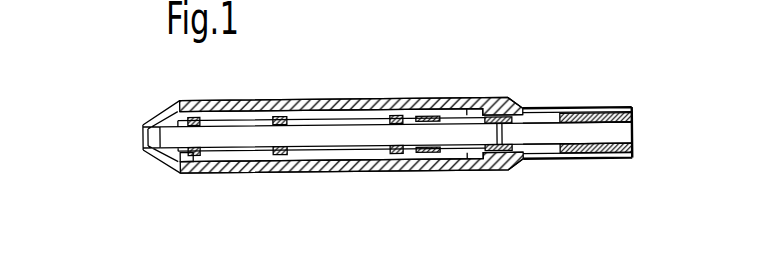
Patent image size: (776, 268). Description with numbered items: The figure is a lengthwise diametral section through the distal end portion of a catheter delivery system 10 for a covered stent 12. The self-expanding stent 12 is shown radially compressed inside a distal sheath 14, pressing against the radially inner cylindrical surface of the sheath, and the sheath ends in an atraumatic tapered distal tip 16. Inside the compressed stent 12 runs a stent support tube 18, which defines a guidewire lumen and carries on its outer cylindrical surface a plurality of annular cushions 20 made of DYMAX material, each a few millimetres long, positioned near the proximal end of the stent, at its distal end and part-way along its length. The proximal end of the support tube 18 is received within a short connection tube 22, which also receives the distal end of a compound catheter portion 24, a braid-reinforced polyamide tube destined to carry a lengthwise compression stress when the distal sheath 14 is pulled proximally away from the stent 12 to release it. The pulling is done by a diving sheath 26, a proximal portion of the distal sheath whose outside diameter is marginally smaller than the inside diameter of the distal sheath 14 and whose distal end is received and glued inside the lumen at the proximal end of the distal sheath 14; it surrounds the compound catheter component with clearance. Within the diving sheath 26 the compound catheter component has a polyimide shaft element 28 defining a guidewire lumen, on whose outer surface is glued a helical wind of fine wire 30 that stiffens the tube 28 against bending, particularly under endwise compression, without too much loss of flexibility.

The delivery system 10 is at (597, 91).
The covered stent 12 is at (345, 157).
The distal sheath 14 is at (382, 99).
The atraumatic tapered distal tip 16 is at (158, 118).
The stent support tube 18 is at (318, 126).
The annular cushions 20 is at (191, 153).
The connection tube 22 is at (497, 152).
The compound catheter portion 24 is at (623, 135).
The diving sheath 26 is at (618, 106).
The polyimide shaft element 28 is at (517, 134).
The helical wind of fine wire 30 is at (602, 152).